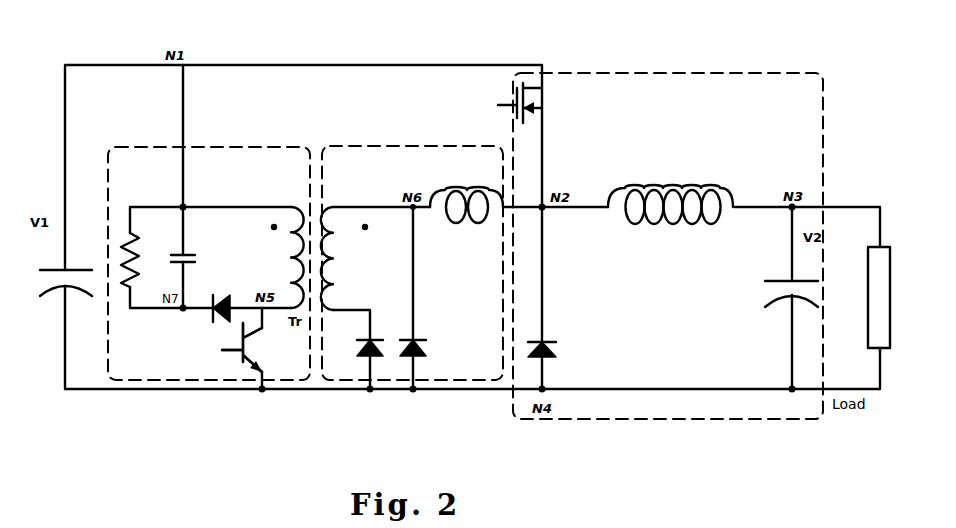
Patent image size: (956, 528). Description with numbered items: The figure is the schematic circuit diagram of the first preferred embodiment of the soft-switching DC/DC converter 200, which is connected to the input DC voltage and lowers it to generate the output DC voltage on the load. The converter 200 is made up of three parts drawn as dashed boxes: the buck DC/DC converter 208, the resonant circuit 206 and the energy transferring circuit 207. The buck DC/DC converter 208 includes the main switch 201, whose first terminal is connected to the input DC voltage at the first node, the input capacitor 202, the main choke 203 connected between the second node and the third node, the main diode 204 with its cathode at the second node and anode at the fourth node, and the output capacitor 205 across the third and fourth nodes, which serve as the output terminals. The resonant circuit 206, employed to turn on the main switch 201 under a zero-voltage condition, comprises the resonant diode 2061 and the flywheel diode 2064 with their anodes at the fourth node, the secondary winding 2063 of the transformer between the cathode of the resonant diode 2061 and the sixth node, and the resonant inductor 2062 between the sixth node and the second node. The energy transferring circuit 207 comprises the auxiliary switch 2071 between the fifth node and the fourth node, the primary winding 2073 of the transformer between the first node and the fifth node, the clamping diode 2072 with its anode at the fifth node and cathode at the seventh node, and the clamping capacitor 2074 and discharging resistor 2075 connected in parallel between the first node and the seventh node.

The soft-switching DC/DC converter 200 is at (240, 55).
The main switch 201 is at (542, 103).
The input capacitor 202 is at (56, 296).
The main choke 203 is at (670, 193).
The main diode 204 is at (564, 346).
The output capacitor 205 is at (770, 291).
The resonant circuit 206 is at (412, 254).
The energy transferring circuit 207 is at (209, 255).
The buck DC/DC converter 208 is at (668, 236).
The resonant diode 2061 is at (355, 358).
The resonant inductor 2062 is at (466, 198).
The secondary winding 2063 is at (355, 258).
The flywheel diode 2064 is at (430, 338).
The auxiliary switch 2071 is at (223, 347).
The clamping diode 2072 is at (197, 313).
The primary winding 2073 is at (275, 257).
The clamping capacitor 2074 is at (202, 249).
The discharging resistor 2075 is at (150, 251).